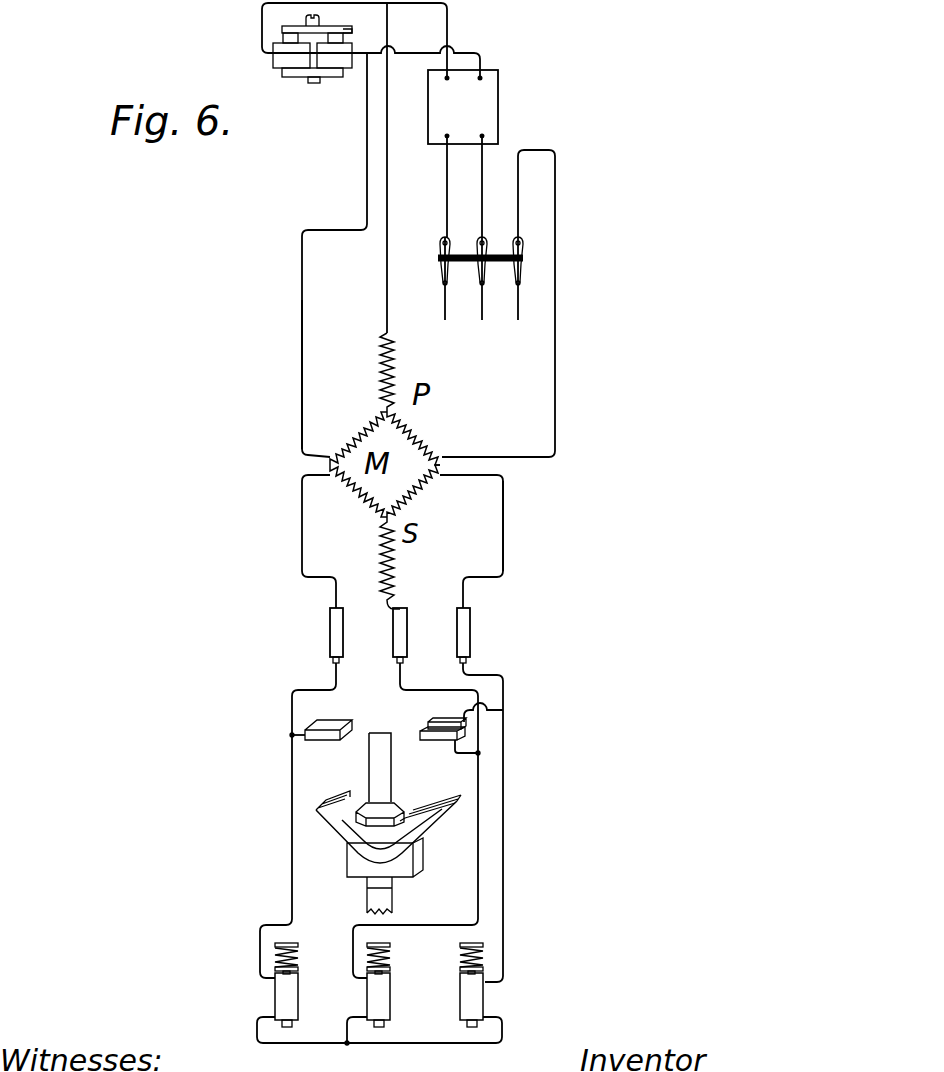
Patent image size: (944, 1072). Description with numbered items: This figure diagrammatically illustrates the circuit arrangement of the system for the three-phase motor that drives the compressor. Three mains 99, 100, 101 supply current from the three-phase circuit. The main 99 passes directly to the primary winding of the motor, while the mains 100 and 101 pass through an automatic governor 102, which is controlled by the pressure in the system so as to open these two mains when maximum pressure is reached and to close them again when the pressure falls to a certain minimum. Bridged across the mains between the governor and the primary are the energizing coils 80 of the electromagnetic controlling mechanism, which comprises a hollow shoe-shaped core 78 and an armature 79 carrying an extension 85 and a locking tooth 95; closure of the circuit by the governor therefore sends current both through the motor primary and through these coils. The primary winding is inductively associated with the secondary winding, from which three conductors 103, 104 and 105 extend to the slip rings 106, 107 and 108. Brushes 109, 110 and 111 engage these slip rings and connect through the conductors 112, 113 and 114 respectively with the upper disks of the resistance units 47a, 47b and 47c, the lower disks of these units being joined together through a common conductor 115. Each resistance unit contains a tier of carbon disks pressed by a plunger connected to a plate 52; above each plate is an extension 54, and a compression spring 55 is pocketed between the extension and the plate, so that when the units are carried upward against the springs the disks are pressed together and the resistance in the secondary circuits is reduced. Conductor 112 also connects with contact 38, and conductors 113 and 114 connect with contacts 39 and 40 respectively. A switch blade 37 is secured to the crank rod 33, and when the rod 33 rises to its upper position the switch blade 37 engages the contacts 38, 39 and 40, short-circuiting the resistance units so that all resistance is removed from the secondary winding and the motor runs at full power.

The extension 85 is at (307, 17).
The armature 79 is at (331, 28).
The locking tooth 95 is at (348, 32).
The energizing coils 80 is at (273, 66).
The core 78 is at (318, 83).
The automatic governor 102 is at (489, 105).
The main 101 is at (445, 195).
The main 100 is at (482, 183).
The main 99 is at (518, 207).
The conductor 103 is at (297, 555).
The conductor 104 is at (390, 605).
The conductor 105 is at (462, 593).
The slip ring 106 is at (330, 635).
The slip ring 107 is at (393, 637).
The slip ring 108 is at (458, 645).
The brush 109 is at (333, 661).
The brush 110 is at (397, 662).
The brush 111 is at (468, 663).
The contact 38 is at (312, 736).
The crank shaft or rod 33 is at (380, 760).
The contact 39 is at (443, 740).
The contact 40 is at (464, 729).
The switch blade 37 is at (344, 836).
The conductor 112 is at (290, 847).
The conductor 113 is at (478, 867).
The conductor 114 is at (503, 812).
The extension 54 is at (300, 943).
The compression spring 55 is at (300, 957).
The plate 52 is at (298, 970).
The resistance device 47a is at (283, 990).
The resistance device 47b is at (373, 993).
The resistance device 47c is at (467, 995).
The common conductor 115 is at (385, 1045).